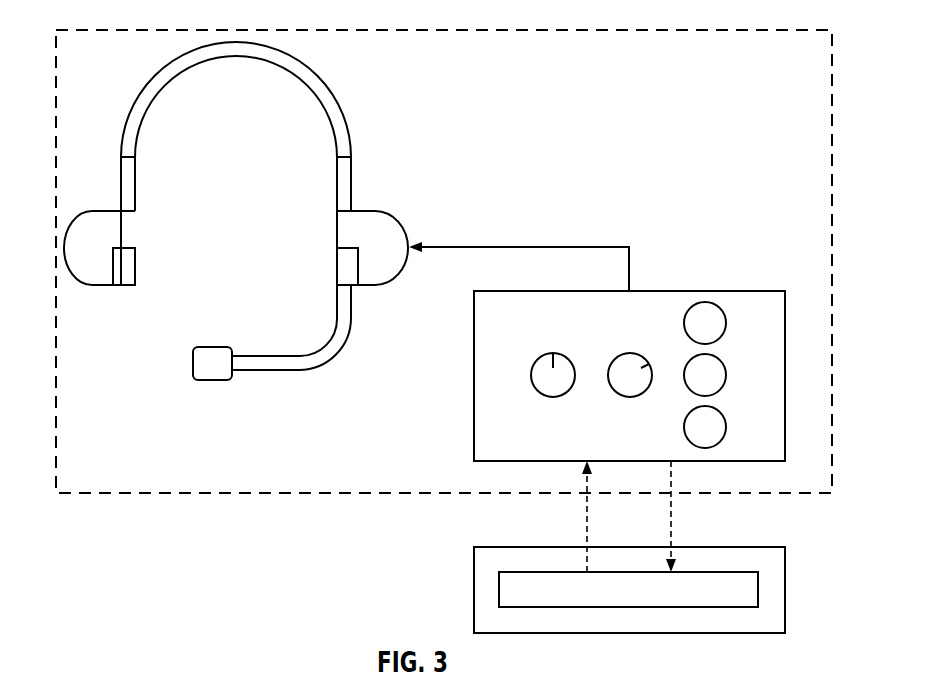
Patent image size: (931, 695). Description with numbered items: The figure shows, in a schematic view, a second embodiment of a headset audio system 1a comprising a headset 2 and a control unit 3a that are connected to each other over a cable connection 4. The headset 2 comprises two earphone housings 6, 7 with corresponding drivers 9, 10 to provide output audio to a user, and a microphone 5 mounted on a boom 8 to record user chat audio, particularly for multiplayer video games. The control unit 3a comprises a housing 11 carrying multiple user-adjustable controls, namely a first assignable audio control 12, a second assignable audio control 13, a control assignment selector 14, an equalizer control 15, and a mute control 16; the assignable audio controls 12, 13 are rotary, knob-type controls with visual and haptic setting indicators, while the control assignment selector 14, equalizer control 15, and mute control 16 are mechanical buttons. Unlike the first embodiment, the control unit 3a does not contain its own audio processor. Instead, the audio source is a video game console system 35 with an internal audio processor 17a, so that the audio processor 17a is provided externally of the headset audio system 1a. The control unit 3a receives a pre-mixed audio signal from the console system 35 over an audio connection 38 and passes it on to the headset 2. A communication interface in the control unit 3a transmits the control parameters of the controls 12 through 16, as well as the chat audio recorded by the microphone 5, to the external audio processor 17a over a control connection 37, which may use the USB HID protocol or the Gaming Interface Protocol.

The headset audio system 1a is at (106, 29).
The headset 2 is at (193, 60).
The control unit 3a is at (765, 332).
The cable connection 4 is at (629, 268).
The microphone 5 is at (213, 363).
The earphone housing 6 is at (72, 250).
The earphone housing 7 is at (388, 268).
The boom 8 is at (298, 365).
The driver 9 is at (126, 275).
The driver 10 is at (350, 262).
The housing 11 is at (521, 291).
The first assignable audio control 12 is at (555, 372).
The second assignable audio control 13 is at (630, 378).
The control assignment selector 14 is at (705, 325).
The equalizer control 15 is at (705, 377).
The mute control 16 is at (705, 429).
The audio processor 17a is at (752, 587).
The video game console system 35 is at (521, 547).
The control connection 37 is at (671, 532).
The audio connection 38 is at (587, 540).